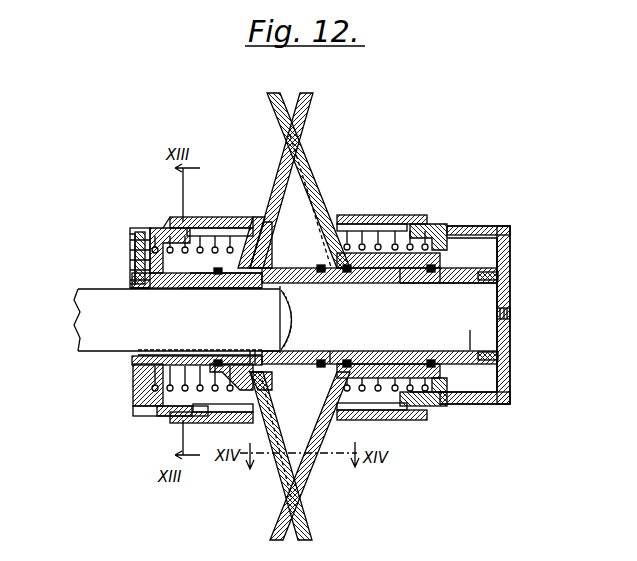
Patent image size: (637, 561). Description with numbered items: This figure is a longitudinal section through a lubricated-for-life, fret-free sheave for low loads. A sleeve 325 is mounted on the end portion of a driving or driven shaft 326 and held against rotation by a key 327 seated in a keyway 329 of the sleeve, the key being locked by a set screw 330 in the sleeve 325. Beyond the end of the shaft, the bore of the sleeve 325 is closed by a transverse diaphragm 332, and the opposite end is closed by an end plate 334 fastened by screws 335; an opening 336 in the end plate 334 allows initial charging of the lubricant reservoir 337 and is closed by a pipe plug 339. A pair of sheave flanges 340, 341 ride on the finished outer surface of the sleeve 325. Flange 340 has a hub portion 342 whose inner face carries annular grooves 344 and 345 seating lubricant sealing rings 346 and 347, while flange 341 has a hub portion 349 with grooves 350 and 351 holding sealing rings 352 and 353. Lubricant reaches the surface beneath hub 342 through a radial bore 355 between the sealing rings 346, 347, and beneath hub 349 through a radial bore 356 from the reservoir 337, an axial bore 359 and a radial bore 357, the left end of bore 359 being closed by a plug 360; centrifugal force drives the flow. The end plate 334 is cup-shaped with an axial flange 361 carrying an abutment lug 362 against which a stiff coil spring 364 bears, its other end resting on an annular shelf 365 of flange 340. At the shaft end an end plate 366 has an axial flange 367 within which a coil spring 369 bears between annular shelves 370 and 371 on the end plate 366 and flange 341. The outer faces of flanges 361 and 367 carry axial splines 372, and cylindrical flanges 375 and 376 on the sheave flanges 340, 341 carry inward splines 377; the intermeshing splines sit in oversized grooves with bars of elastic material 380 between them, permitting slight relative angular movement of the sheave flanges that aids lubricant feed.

The sleeve 325 is at (130, 282).
The shaft 326 is at (78, 344).
The key 327 is at (168, 286).
The keyway 329 is at (192, 288).
The set screw 330 is at (130, 268).
The diaphragm 332 is at (300, 300).
The end plate 334 is at (511, 252).
The screws 335 is at (511, 272).
The opening 336 is at (511, 330).
The lubricant reservoir 337 is at (470, 345).
The pipe plug 339 is at (511, 313).
The sheave flange 340 is at (312, 152).
The sheave flange 341 is at (272, 149).
The hub portion 342 is at (400, 283).
The annular groove 344 is at (384, 345).
The annular groove 345 is at (440, 370).
The lubricant sealing ring 346 is at (360, 283).
The lubricant sealing ring 347 is at (440, 263).
The hub portion 349 is at (270, 262).
The groove 350 is at (212, 352).
The groove 351 is at (268, 382).
The sealing ring 352 is at (206, 282).
The sealing ring 353 is at (326, 280).
The radial bore 355 is at (442, 280).
The radial bore 356 is at (331, 351).
The radial bore 357 is at (270, 366).
The axial bore 359 is at (253, 349).
The plug 360 is at (140, 356).
The flange 361 is at (472, 404).
The abutment lug 362 is at (436, 408).
The coil spring 364 is at (412, 234).
The annular shelf 365 is at (364, 244).
The end plate 366 is at (135, 388).
The flange 367 is at (150, 410).
The coil spring 369 is at (214, 422).
The annular shelf 370 is at (135, 240).
The annular shelf 371 is at (238, 252).
The splines 372 is at (140, 228).
The cylindrical flange 375 is at (400, 216).
The cylindrical flange 376 is at (178, 227).
The splines 377 is at (208, 228).
The bars of elastic material 380 is at (160, 416).